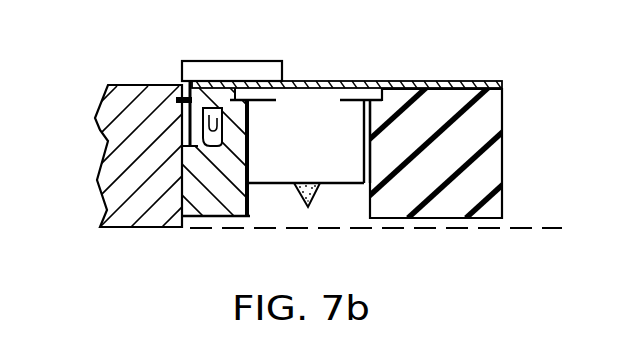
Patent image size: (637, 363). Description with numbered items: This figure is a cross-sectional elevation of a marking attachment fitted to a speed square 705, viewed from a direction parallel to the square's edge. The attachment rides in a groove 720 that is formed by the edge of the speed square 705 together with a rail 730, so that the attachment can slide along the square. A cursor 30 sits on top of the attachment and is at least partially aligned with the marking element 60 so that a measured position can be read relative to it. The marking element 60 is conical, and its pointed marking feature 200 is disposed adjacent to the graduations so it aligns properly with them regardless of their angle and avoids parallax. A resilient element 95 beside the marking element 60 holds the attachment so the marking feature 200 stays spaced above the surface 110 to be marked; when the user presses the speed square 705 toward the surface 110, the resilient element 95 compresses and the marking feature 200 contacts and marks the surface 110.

The cursor 30 is at (240, 61).
The marking element 60 is at (320, 153).
The resilient element 95 is at (493, 160).
The surface 110 is at (520, 228).
The marking feature 200 is at (307, 207).
The speed square 705 is at (98, 167).
The groove 720 is at (187, 112).
The rail 730 is at (210, 216).